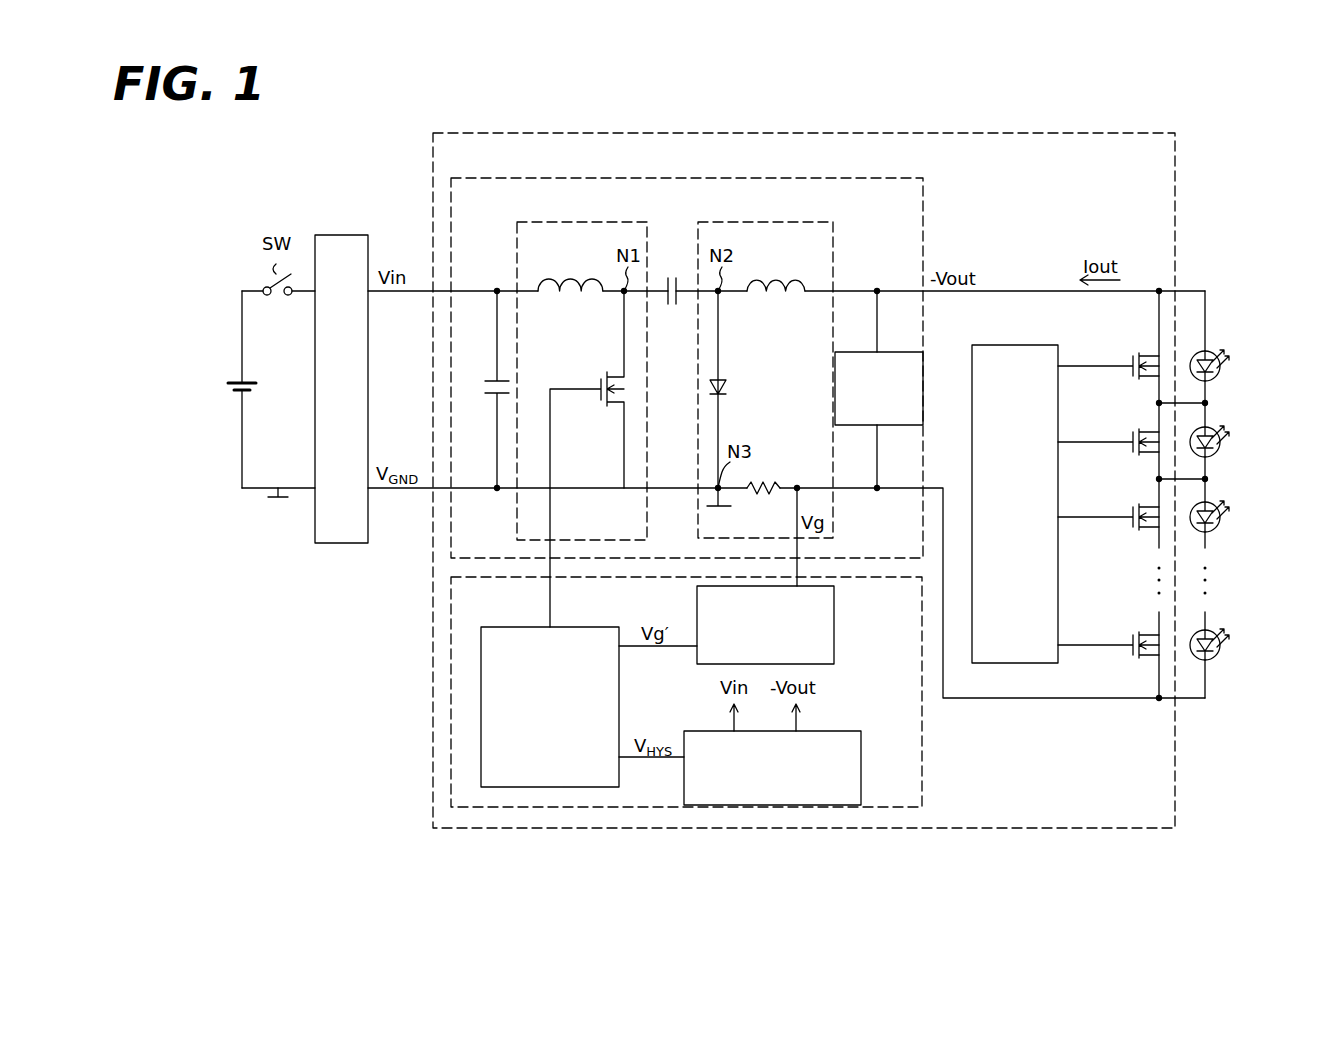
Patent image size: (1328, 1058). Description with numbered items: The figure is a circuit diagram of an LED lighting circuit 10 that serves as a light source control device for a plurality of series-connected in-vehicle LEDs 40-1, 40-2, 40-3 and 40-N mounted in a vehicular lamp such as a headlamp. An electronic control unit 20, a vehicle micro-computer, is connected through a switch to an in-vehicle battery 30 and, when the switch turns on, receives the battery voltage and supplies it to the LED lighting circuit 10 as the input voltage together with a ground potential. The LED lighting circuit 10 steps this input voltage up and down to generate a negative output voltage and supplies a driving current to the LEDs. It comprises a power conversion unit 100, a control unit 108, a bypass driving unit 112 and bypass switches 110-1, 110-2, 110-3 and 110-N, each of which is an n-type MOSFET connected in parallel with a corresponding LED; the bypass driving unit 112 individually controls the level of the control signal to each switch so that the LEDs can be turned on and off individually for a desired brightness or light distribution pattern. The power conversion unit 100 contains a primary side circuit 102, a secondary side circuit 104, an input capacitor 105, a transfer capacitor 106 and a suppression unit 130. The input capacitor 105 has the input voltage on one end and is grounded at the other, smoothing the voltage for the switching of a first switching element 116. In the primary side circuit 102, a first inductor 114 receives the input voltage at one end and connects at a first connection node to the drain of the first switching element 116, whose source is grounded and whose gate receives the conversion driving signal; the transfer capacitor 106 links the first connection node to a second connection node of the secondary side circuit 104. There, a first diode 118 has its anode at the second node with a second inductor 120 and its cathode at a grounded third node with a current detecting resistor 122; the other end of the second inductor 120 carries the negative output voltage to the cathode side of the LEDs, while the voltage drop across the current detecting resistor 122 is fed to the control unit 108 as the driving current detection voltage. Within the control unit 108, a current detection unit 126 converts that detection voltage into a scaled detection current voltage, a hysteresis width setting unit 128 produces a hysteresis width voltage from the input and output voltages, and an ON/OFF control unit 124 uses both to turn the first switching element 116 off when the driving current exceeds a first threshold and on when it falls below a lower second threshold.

The LED lighting circuit 10 is at (1108, 830).
The electronic control unit 20 is at (342, 545).
The in-vehicle battery 30 is at (236, 395).
The power conversion unit 100 is at (869, 166).
The primary side circuit 102 is at (585, 222).
The secondary side circuit 104 is at (775, 222).
The input capacitor 105 is at (490, 378).
The transfer capacitor 106 is at (670, 278).
The control unit 108 is at (923, 793).
The bypass switch 110-1 is at (1114, 360).
The bypass switch 110-2 is at (1114, 436).
The bypass switch 110-3 is at (1114, 512).
The bypass switch 110-N is at (1114, 637).
The bypass driving unit 112 is at (1019, 333).
The first inductor 114 is at (567, 280).
The first switching element 116 is at (601, 372).
The first diode 118 is at (734, 392).
The second inductor 120 is at (787, 280).
The current detecting resistor 122 is at (768, 475).
The ON/OFF control unit 124 is at (589, 615).
The current detection unit 126 is at (836, 640).
The hysteresis width setting unit 128 is at (863, 756).
The suppression unit 130 is at (906, 340).
The in-vehicle LED 40-1 is at (1218, 352).
The in-vehicle LED 40-2 is at (1218, 428).
The in-vehicle LED 40-3 is at (1218, 503).
The in-vehicle LED 40-N is at (1218, 631).